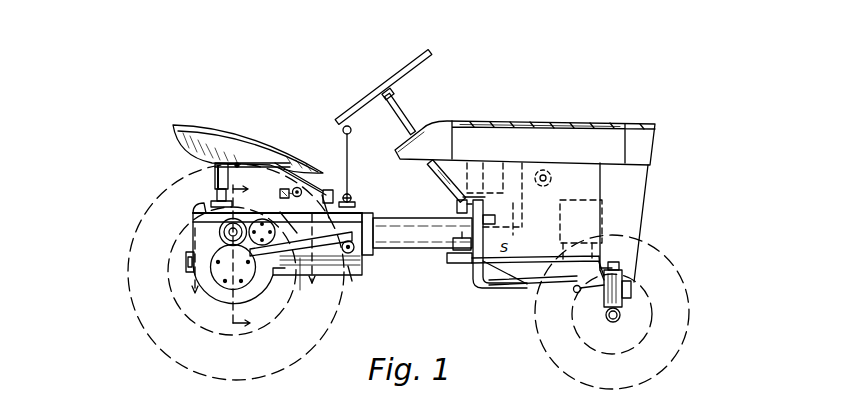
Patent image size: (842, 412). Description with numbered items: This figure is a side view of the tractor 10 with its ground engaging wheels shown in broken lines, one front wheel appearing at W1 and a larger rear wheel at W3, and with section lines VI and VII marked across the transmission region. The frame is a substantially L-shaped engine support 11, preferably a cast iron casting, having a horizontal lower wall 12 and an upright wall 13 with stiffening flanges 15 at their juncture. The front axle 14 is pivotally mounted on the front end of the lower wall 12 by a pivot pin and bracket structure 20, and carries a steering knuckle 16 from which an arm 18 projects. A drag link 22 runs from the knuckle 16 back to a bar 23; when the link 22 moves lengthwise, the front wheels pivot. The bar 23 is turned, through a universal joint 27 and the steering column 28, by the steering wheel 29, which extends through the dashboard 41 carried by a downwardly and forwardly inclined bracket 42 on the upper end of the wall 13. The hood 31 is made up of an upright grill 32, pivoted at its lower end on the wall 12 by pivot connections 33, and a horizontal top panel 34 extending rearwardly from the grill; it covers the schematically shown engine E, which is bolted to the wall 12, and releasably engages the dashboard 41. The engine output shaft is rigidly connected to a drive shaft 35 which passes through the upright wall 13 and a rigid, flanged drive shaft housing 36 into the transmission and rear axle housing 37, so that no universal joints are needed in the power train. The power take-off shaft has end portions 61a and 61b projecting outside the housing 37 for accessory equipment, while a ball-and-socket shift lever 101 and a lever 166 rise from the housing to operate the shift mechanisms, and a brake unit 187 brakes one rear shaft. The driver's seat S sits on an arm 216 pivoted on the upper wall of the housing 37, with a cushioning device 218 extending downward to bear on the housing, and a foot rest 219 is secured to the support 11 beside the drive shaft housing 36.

The tractor 10 is at (556, 101).
The engine support 11 is at (537, 268).
The lower wall 12 is at (537, 286).
The upright wall 13 is at (487, 216).
The front axle 14 is at (620, 316).
The stiffening flanges 15 is at (500, 270).
The steering knuckle 16 is at (592, 292).
The arm 18 is at (578, 294).
The pivot pin and bracket structure 20 is at (637, 295).
The drag link 22 is at (572, 278).
The bar 23 is at (448, 251).
The universal joint 27 is at (457, 205).
The steering column 28 is at (402, 108).
The steering wheel 29 is at (430, 57).
The hood 31 is at (611, 120).
The grill 32 is at (650, 184).
The pivot connections 33 is at (634, 282).
The top panel 34 is at (570, 124).
The drive shaft 35 is at (475, 267).
The drive shaft housing 36 is at (415, 254).
The transmission and rear axle housing 37 is at (340, 280).
The dashboard 41 is at (399, 149).
The bracket 42 is at (444, 174).
The end portion 61a is at (348, 280).
The end portion 61b is at (186, 258).
The shift lever 101 is at (343, 128).
The lever 166 is at (333, 196).
The brake unit 187 is at (226, 239).
The arm 216 is at (320, 172).
The cushioning device 218 is at (213, 178).
The foot rest 219 is at (478, 290).
The driver's seat S is at (222, 125).
The engine E is at (538, 176).
The front wheel W1 is at (689, 302).
The rear wheel W3 is at (128, 285).
The section line VI is at (254, 264).
The section line VII is at (255, 253).